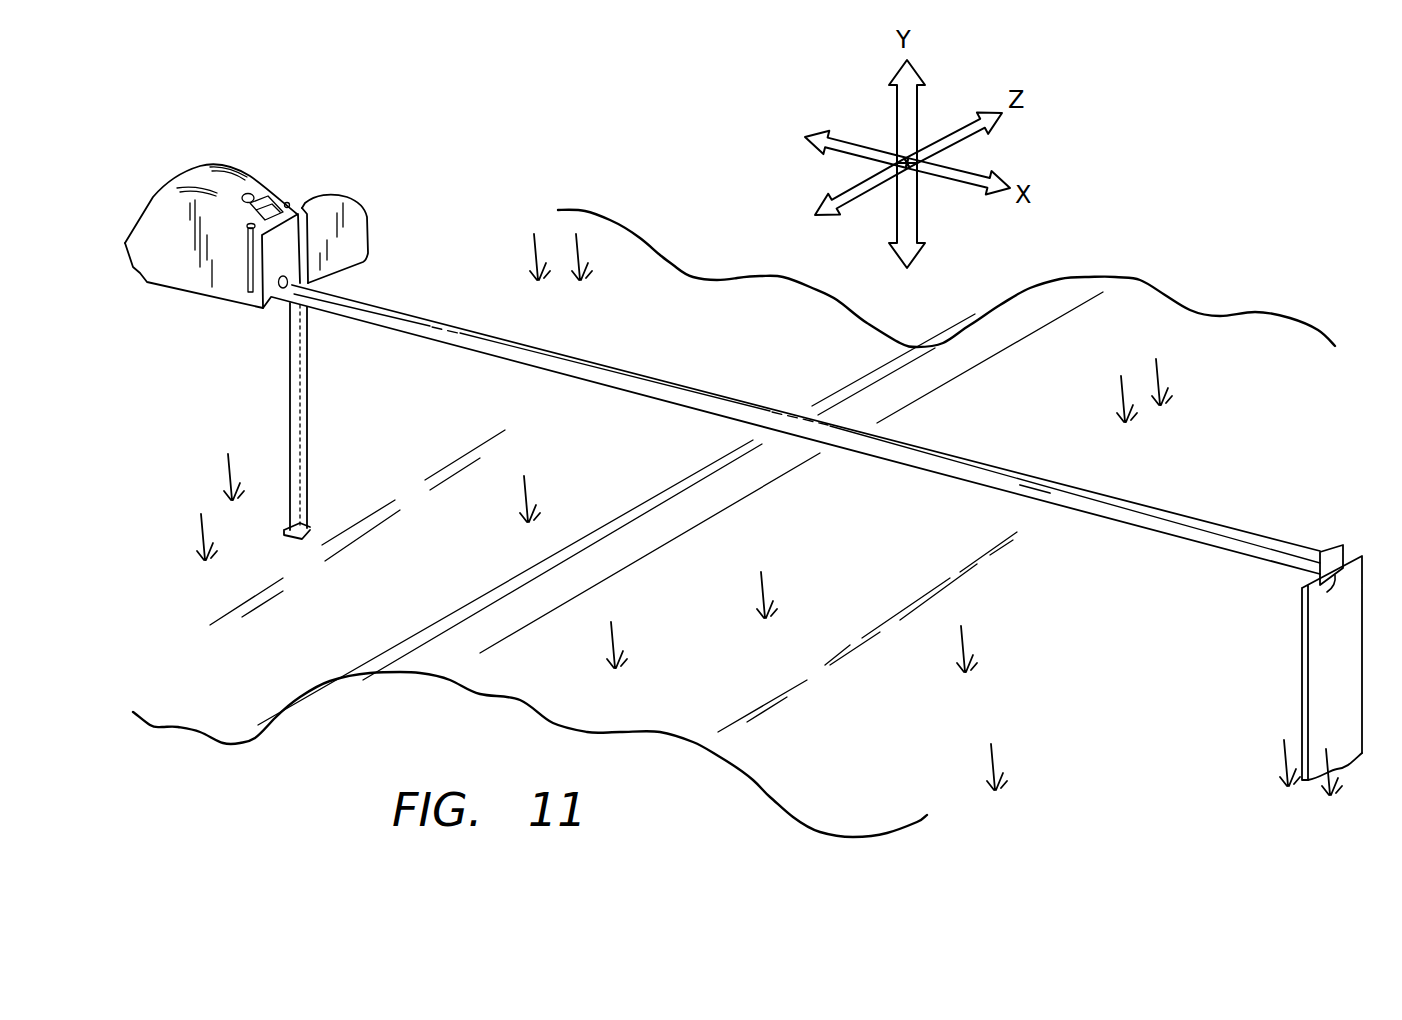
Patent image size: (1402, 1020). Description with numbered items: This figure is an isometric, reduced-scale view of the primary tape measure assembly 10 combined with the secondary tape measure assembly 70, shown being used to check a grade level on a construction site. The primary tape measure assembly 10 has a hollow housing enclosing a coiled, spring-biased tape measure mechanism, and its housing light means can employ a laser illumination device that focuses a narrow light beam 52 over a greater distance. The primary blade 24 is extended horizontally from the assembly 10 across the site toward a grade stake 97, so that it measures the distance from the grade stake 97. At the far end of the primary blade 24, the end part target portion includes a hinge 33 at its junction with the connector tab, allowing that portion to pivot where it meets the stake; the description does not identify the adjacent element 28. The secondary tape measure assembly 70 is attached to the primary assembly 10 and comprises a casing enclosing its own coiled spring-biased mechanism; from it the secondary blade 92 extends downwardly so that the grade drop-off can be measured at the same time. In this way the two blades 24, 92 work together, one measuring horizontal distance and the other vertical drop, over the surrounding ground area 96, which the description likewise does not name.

The primary tape measure assembly 10 is at (187, 172).
The secondary tape measure assembly 70 is at (354, 194).
The secondary blade 92 is at (289, 378).
The primary blade 24 is at (628, 393).
The narrow light beam 52 is at (1037, 477).
The ground surface 96 is at (1100, 360).
The target bracket 28 is at (1319, 547).
The hinge 33 is at (1333, 583).
The grade stake 97 is at (1326, 666).